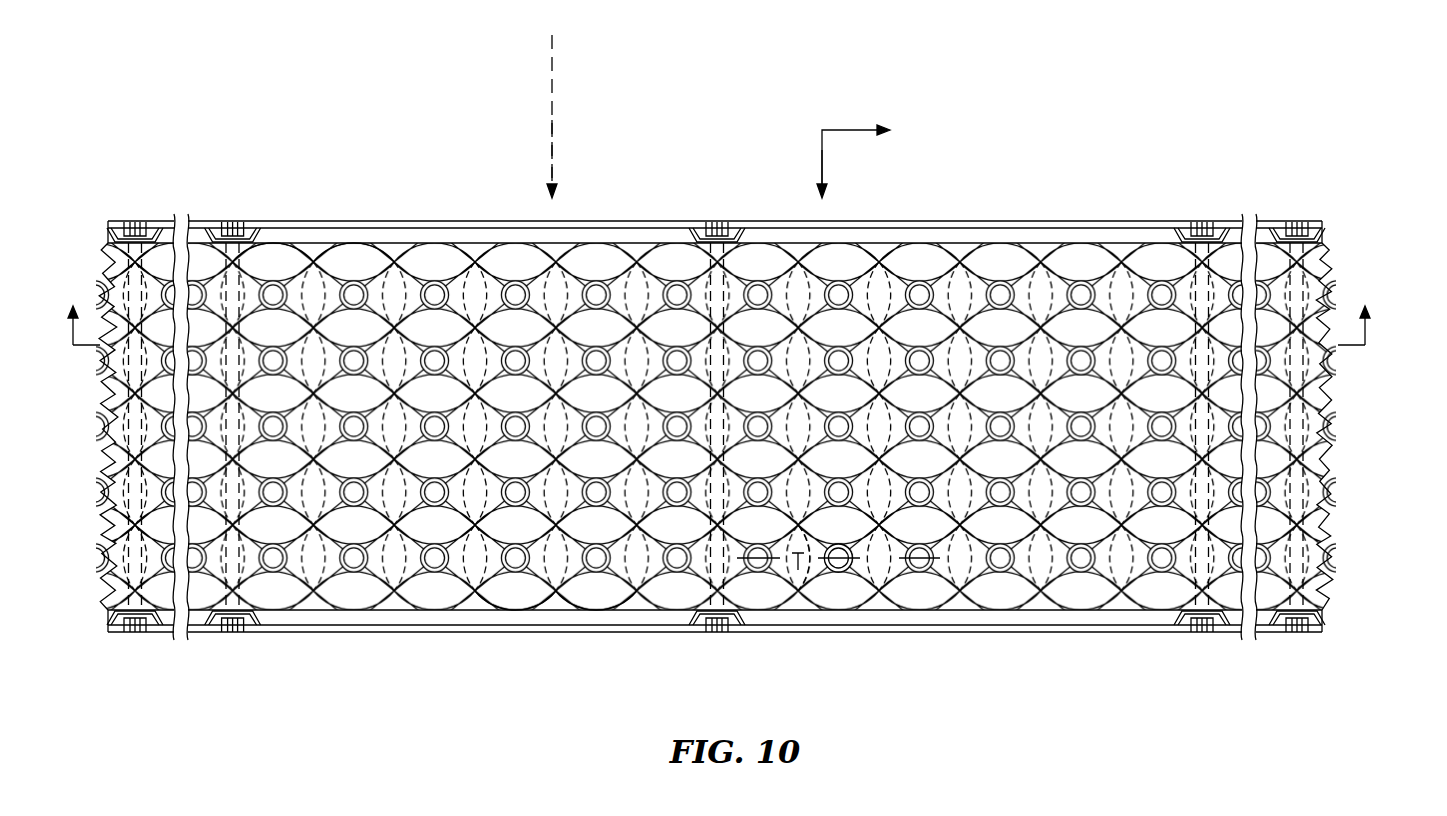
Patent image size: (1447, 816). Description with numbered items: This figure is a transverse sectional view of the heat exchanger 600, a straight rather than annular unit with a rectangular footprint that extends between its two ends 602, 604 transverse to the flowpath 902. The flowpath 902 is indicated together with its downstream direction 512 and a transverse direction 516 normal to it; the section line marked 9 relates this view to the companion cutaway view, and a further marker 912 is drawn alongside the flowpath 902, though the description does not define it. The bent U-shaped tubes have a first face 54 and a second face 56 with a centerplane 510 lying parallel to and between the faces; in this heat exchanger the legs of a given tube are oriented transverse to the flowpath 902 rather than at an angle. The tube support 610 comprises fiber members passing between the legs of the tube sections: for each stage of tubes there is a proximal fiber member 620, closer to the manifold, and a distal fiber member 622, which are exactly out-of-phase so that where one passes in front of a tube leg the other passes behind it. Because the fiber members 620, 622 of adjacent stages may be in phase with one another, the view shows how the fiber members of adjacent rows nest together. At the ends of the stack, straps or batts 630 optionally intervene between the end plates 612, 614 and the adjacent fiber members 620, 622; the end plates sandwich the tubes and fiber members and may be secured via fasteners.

The heat exchanger 600 is at (1207, 188).
The end plate 614 is at (1082, 222).
The end plate 612 is at (1088, 634).
The straps or batts 630 is at (318, 229).
The distal fiber member 622 is at (268, 260).
The proximal fiber member 620 is at (358, 262).
The centerplane 510 is at (775, 592).
The second face 56 is at (841, 530).
The first face 54 is at (840, 580).
The end 604 is at (97, 600).
The tube support 610 is at (1336, 242).
The end 602 is at (1347, 431).
The flowpath 902 is at (560, 42).
The section line 912 is at (563, 161).
The transverse direction 516 is at (872, 128).
The downstream direction 512 is at (820, 152).
The section 9-9 indicator 9 is at (718, 314).